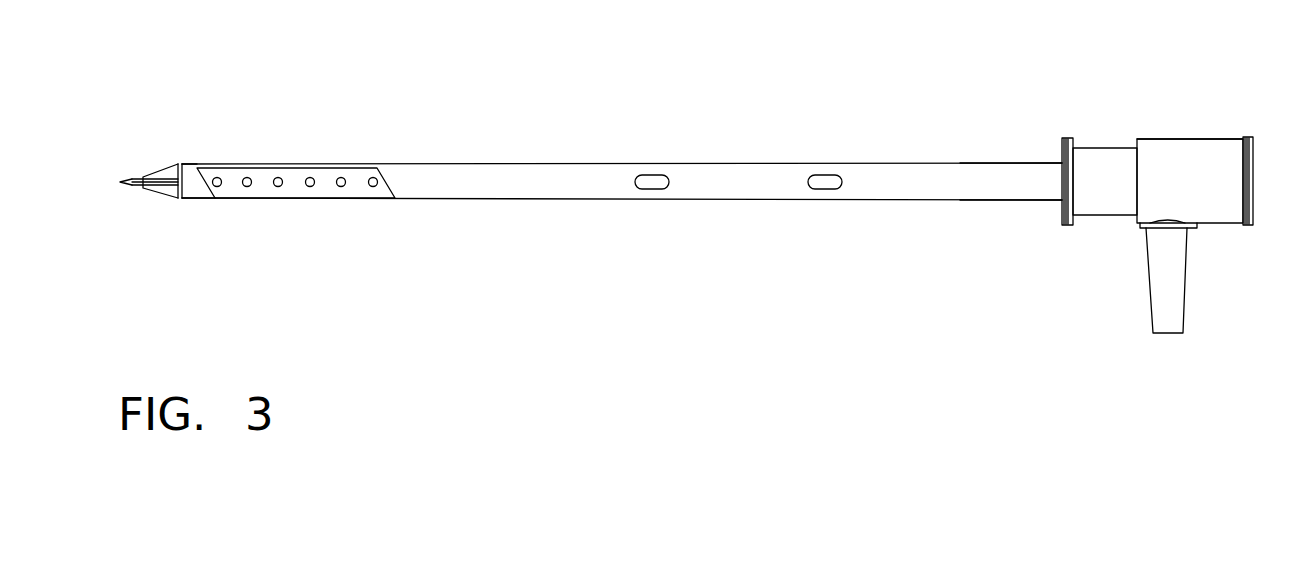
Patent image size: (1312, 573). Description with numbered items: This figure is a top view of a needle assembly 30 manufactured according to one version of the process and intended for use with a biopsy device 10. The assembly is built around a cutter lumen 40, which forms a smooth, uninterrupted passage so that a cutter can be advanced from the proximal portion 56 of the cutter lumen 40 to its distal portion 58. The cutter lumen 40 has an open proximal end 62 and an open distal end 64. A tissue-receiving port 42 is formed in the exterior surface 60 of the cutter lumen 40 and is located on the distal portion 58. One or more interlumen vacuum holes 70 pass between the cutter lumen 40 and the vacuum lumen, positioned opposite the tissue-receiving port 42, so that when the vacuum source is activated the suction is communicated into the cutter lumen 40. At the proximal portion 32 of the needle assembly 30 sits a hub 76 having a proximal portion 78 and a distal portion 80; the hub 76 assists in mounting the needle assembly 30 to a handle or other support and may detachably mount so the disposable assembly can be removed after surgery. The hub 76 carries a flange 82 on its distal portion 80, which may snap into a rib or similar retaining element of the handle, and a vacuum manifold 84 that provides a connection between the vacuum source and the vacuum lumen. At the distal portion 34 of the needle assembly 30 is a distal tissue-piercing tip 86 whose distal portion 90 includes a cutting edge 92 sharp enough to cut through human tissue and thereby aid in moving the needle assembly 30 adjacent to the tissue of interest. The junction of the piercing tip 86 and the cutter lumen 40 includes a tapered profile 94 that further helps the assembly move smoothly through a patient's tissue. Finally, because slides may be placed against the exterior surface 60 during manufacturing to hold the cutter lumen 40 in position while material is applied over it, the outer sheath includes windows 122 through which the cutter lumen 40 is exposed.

The biopsy device 10 is at (540, 66).
The needle assembly 30 is at (447, 137).
The proximal portion of needle assembly 32 is at (988, 128).
The distal portion of needle assembly 34 is at (280, 136).
The cutter lumen 40 is at (604, 200).
The tissue-receiving port 42 is at (325, 177).
The proximal portion of cutter lumen 56 is at (997, 200).
The distal portion of cutter lumen 58 is at (192, 200).
The exterior surface of cutter lumen 60 is at (564, 163).
The open proximal end 62 is at (1255, 182).
The open distal end 64 is at (182, 200).
The interlumen vacuum holes 70 is at (341, 187).
The hub 76 is at (1170, 139).
The proximal portion of hub 78 is at (1218, 139).
The distal portion of hub 80 is at (1095, 148).
The flange 82 is at (1066, 225).
The vacuum manifold 84 is at (1187, 290).
The distal tissue-piercing tip 86 is at (168, 166).
The distal portion of tissue-piercing tip 90 is at (125, 190).
The cutting edge 92 is at (133, 177).
The tapered profile 94 is at (177, 160).
The windows 122 is at (652, 177).